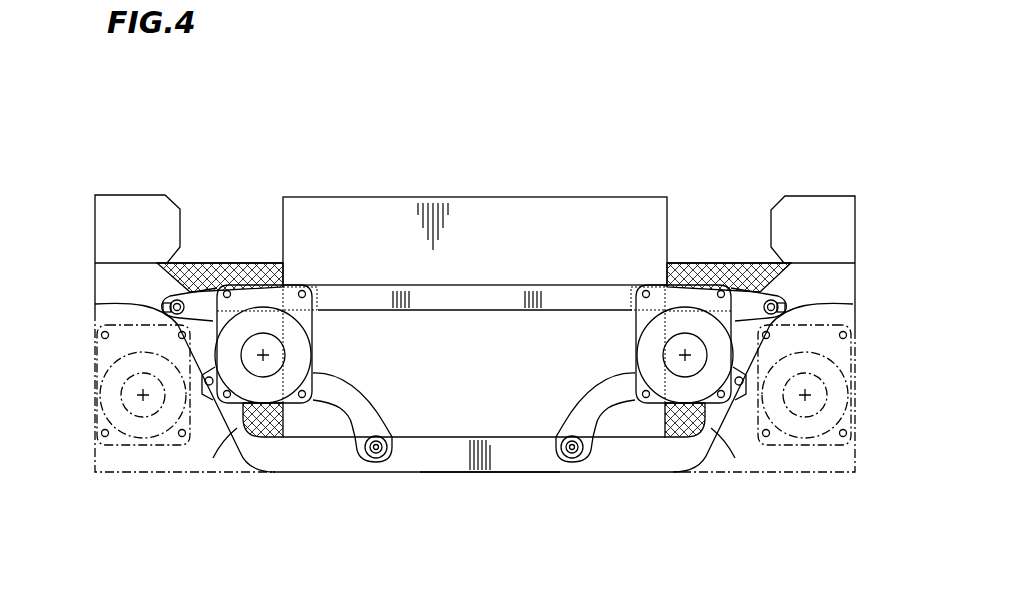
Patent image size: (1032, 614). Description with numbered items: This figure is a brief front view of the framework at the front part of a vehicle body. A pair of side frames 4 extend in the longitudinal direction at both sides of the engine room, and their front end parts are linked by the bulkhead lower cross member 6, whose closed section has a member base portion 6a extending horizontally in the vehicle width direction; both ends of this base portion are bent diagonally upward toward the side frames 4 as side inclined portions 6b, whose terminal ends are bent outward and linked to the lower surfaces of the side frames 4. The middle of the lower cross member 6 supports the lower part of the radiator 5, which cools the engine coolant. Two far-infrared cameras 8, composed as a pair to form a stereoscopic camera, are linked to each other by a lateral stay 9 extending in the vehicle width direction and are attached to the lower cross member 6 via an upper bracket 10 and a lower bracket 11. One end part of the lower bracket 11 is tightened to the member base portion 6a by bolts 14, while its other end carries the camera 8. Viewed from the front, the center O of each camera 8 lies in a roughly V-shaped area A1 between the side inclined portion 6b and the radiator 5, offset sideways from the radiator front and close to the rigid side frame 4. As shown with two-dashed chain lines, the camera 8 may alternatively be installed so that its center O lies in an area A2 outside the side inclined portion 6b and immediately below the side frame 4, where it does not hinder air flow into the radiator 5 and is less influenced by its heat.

The side frame 4 is at (122, 195).
The radiator 5 is at (388, 197).
The bulkhead lower cross member 6 is at (442, 473).
The member base portion 6a is at (508, 473).
The side inclined portion 6b is at (226, 440).
The far-infrared camera 8 is at (112, 390).
The lateral stay 9 is at (536, 286).
The upper bracket 10 is at (202, 287).
The lower bracket 11 is at (340, 398).
The bolt 14 is at (165, 303).
The roughly V-shaped area A1 is at (243, 263).
The area outside the side inclined portion A2 is at (168, 458).
The center of the camera O is at (265, 354).